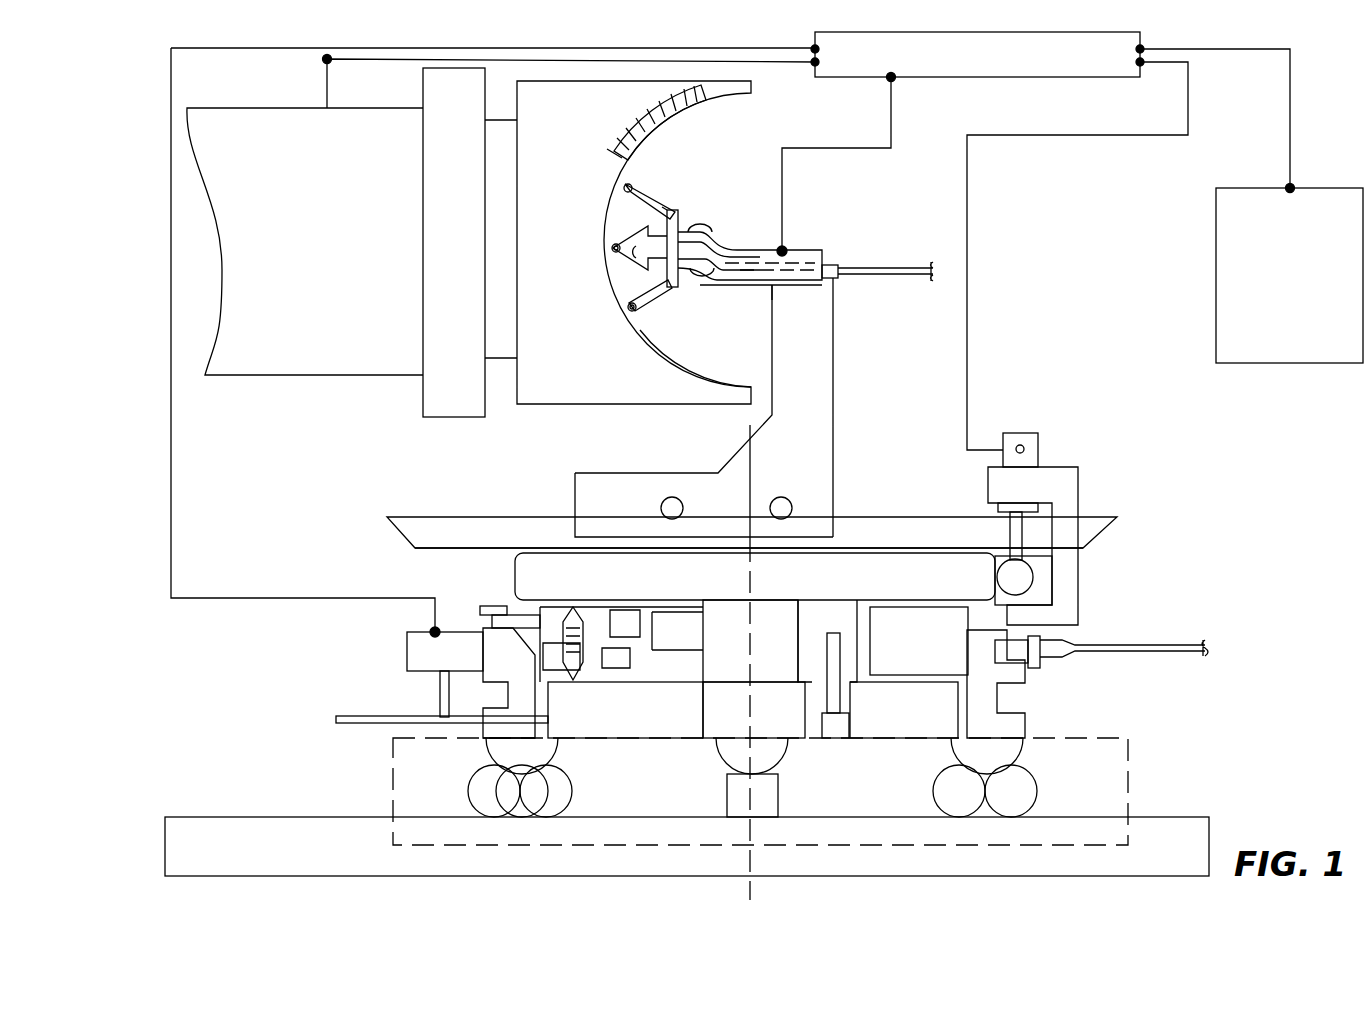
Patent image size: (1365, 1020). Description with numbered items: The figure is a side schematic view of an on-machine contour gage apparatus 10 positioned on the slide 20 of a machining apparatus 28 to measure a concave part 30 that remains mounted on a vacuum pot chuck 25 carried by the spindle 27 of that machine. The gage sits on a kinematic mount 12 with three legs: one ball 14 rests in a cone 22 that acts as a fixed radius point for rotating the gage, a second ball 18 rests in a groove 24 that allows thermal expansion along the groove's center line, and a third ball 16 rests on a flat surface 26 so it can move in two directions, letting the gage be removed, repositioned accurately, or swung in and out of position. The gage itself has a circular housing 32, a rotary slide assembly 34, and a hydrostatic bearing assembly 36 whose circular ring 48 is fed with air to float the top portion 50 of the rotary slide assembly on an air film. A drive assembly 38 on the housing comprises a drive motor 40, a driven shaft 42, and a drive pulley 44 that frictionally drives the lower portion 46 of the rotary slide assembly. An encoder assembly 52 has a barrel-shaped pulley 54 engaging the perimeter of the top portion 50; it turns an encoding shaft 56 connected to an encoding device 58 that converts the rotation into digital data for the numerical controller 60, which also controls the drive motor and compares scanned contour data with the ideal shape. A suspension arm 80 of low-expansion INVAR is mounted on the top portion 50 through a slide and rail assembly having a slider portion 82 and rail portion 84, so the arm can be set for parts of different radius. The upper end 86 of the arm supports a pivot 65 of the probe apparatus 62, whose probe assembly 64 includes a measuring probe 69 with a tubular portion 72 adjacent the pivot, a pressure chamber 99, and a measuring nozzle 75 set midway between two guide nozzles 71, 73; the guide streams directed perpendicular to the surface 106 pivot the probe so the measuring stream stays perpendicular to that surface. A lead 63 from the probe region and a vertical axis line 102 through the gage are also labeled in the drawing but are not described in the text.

The on-machine contour gage apparatus 10 is at (325, 474).
The kinematic mount 12 is at (1128, 742).
The ball 14 is at (480, 759).
The ball 16 is at (720, 752).
The ball 18 is at (950, 748).
The slide 20 is at (1175, 837).
The cone 22 is at (435, 792).
The groove 24 is at (1020, 789).
The vacuum pot chuck 25 is at (685, 405).
The flat surface 26 is at (790, 772).
The spindle 27 is at (423, 400).
The machining apparatus 28 is at (298, 97).
The part 30 is at (688, 110).
The circular housing 32 is at (1000, 707).
The rotary slide assembly 34 is at (425, 579).
The hydrostatic bearing assembly 36 is at (1080, 638).
The drive assembly 38 is at (400, 624).
The drive motor 40 is at (410, 652).
The driven shaft 42 is at (440, 682).
The drive pulley 44 is at (405, 723).
The lower portion of rotary slide assembly 46 is at (605, 725).
The circular ring 48 is at (1030, 670).
The top portion of rotary slide assembly 50 is at (525, 582).
The encoder assembly 52 is at (1105, 494).
The barrel-shaped pulley 54 is at (1028, 582).
The encoding shaft 56 is at (1010, 530).
The encoding device 58 is at (1038, 454).
The numerical controller 60 is at (1102, 80).
The probe apparatus 62 is at (742, 177).
The cable 63 is at (898, 267).
The probe assembly 64 is at (678, 312).
The pivot 65 is at (782, 240).
The measuring probe 69 is at (642, 230).
The guide nozzle 71 is at (628, 312).
The tubular portion 72 is at (700, 232).
The guide nozzle 73 is at (635, 186).
The measuring nozzle 75 is at (612, 254).
The suspension arm 80 is at (815, 440).
The slider portion 82 is at (608, 483).
The rail portion 84 is at (460, 517).
The upper end of suspension arm 86 is at (790, 287).
The pressure chamber 99 is at (655, 287).
The axis 102 is at (755, 880).
The surface 106 is at (673, 360).